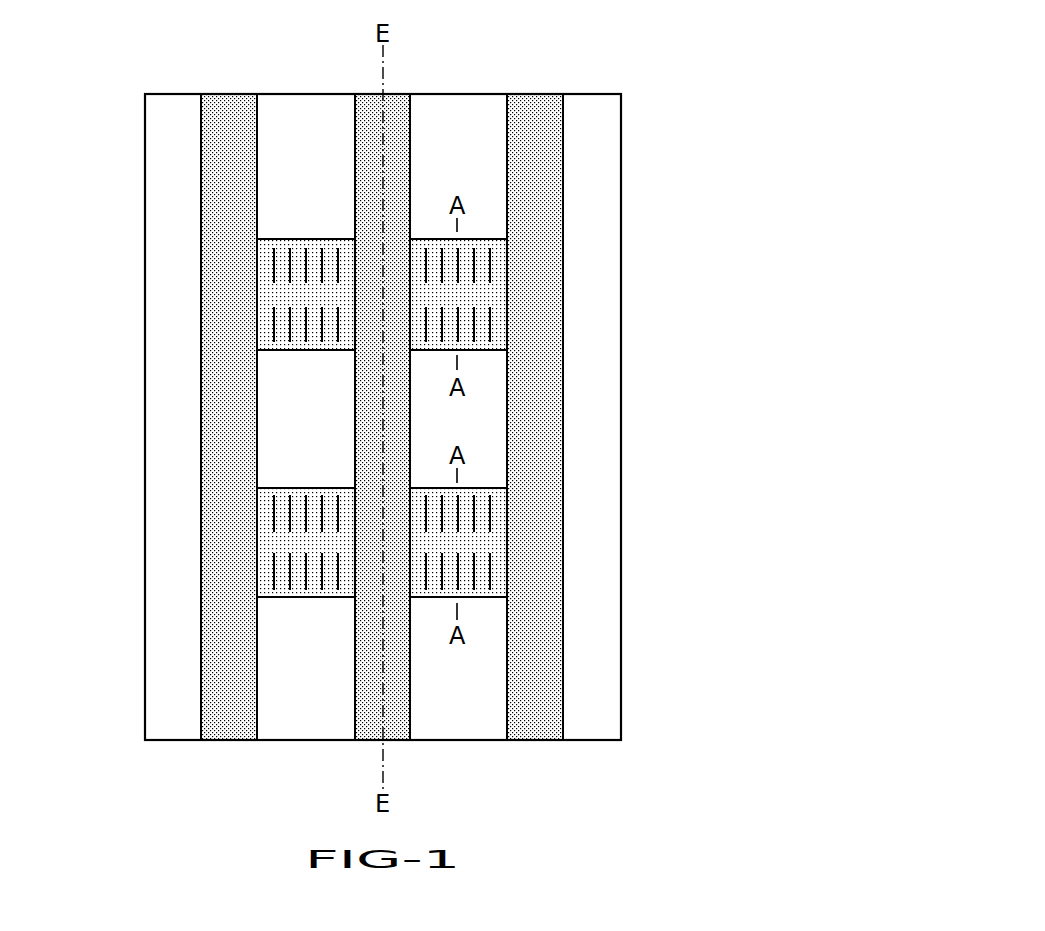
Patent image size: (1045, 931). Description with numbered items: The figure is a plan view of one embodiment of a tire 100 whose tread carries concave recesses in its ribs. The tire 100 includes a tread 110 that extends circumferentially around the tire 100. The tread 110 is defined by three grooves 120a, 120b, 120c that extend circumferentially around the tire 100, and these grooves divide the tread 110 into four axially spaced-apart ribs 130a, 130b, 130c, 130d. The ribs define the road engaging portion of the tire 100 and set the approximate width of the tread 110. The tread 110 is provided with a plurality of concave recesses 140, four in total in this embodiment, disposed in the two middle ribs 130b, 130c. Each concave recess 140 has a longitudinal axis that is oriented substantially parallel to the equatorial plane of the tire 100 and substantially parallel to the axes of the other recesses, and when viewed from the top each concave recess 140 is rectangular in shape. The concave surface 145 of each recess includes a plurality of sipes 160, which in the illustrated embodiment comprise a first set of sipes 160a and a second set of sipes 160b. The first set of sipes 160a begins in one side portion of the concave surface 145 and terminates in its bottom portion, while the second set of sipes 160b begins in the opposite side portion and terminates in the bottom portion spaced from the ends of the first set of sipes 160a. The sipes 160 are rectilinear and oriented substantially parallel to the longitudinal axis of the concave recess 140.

The tire 100 is at (571, 54).
The tread 110 is at (462, 116).
The groove 120a is at (235, 730).
The groove 120b is at (398, 730).
The groove 120c is at (540, 730).
The rib 130a is at (164, 698).
The rib 130b is at (338, 698).
The rib 130c is at (490, 698).
The rib 130d is at (600, 697).
The concave recess 140 is at (478, 362).
The concave surface 145 is at (490, 297).
The sipes 160 is at (490, 263).
The first set of sipes 160a is at (495, 495).
The second set of sipes 160b is at (495, 552).